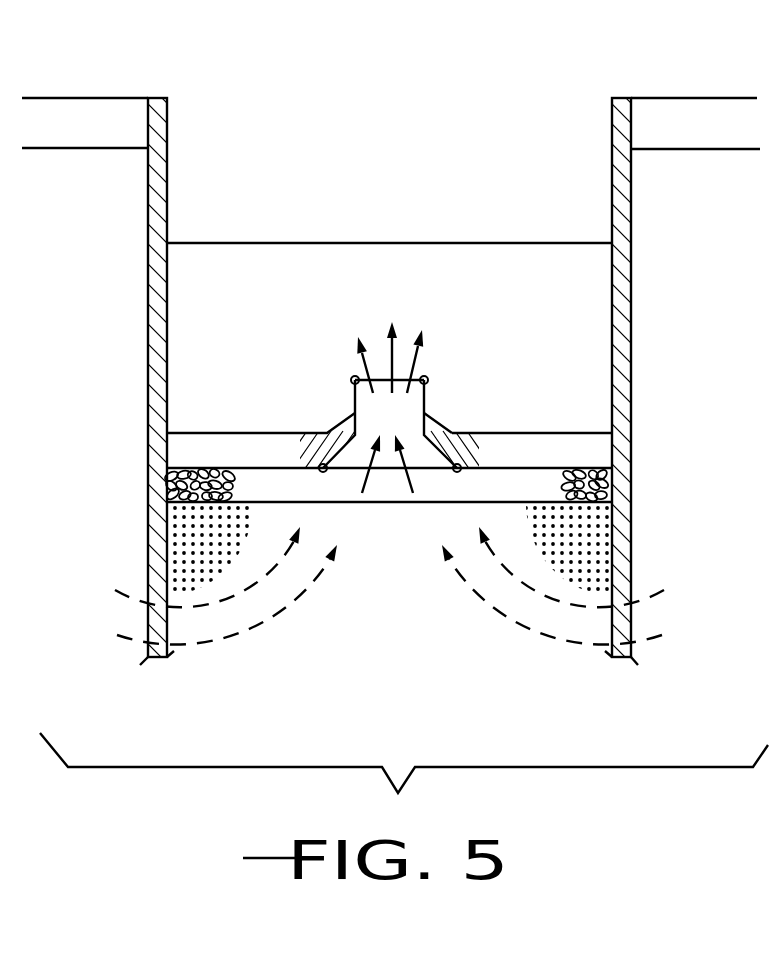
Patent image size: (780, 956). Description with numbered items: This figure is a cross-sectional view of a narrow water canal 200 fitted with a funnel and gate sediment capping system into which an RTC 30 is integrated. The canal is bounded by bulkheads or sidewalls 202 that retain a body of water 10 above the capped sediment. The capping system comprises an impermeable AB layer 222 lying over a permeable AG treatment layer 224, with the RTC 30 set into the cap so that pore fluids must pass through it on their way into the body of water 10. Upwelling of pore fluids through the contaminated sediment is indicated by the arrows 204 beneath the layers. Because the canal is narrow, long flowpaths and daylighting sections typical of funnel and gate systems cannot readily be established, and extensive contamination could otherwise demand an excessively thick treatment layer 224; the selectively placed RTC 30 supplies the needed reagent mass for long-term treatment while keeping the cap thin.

The water canal 200 is at (366, 116).
The bulkheads or sidewalls 202 is at (160, 187).
The body of water 10 is at (260, 307).
The RTC 30 is at (405, 405).
The impermeable AB layer 222 is at (582, 448).
The permeable AG treatment layer 224 is at (543, 483).
The arrows 204 is at (547, 596).